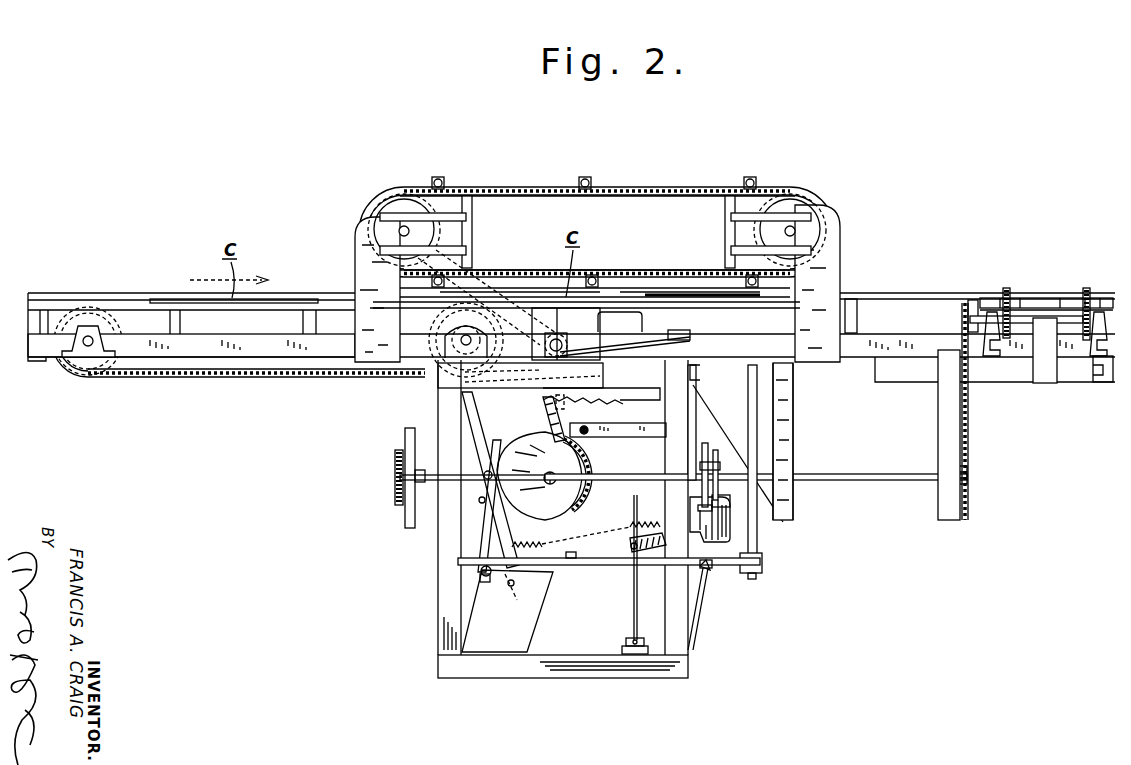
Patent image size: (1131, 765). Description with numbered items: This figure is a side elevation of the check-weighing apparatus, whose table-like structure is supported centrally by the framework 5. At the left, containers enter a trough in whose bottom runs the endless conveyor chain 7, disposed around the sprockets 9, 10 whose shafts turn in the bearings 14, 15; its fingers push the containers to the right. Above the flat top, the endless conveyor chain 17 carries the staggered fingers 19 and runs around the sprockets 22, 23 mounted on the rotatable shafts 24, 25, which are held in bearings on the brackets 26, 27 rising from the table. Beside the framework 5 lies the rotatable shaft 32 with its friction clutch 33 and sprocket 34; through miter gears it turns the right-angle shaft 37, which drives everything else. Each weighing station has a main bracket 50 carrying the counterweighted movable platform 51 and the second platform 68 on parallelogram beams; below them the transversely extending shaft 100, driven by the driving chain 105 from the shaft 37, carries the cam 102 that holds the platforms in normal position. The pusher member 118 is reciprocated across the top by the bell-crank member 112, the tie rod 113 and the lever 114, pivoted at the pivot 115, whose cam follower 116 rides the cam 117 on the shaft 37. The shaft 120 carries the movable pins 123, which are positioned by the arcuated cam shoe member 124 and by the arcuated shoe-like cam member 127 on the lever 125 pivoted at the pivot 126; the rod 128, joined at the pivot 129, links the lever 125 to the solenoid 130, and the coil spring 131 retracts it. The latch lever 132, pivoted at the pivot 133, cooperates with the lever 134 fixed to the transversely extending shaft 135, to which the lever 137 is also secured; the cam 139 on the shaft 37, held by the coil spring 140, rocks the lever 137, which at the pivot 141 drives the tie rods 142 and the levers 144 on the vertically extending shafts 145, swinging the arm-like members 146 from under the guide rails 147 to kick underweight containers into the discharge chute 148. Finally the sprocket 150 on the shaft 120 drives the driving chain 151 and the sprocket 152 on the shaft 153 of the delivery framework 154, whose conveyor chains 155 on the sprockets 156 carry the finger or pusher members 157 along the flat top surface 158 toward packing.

The framework 5 is at (438, 588).
The endless conveyor chain 7 is at (166, 379).
The sprocket 9 is at (77, 320).
The sprocket 10 is at (452, 312).
The bearing 14 is at (96, 345).
The bearing 15 is at (455, 340).
The endless conveyor chain 17 is at (661, 189).
The fingers 19 is at (446, 184).
The sprocket 22 is at (405, 196).
The sprocket 23 is at (801, 198).
The rotatable shaft 24 is at (399, 230).
The rotatable shaft 25 is at (797, 232).
The bracket 26 is at (358, 247).
The bracket 27 is at (831, 248).
The rotatable shaft 32 is at (480, 500).
The friction clutch 33 is at (404, 518).
The sprocket 34 is at (394, 490).
The shaft 37 is at (588, 485).
The main bracket 50 is at (610, 350).
The movable platform 51 is at (597, 297).
The second platform 68 is at (640, 322).
The transversely extending shaft 100 is at (557, 357).
The cam 102 is at (548, 345).
The driving chain 105 is at (546, 418).
The bell-crank member 112 is at (690, 340).
The tie rod 113 is at (608, 402).
The lever 114 is at (497, 515).
The pivot 115 is at (511, 588).
The cam follower 116 is at (478, 513).
The cam 117 is at (572, 567).
The pusher member 118 is at (520, 297).
The shaft 120 is at (858, 481).
The movable pins 123 is at (730, 503).
The arcuated cam shoe member 124 is at (710, 490).
The lever 125 is at (735, 537).
The pivot 126 is at (700, 585).
The arcuated shoe-like cam member 127 is at (718, 468).
The rod 128 is at (632, 612).
The pivot 129 is at (630, 545).
The solenoid 130 is at (638, 655).
The coil spring 131 is at (712, 575).
The latch lever 132 is at (700, 392).
The pivot 133 is at (704, 370).
The lever 134 is at (630, 440).
The transversely extending shaft 135 is at (586, 436).
The lever 137 is at (562, 412).
The cam 139 is at (580, 508).
The coil spring 140 is at (527, 540).
The pivot 141 is at (486, 575).
The tie rods 142 is at (615, 568).
The levers 144 is at (762, 563).
The vertically extending shafts 145 is at (791, 392).
The arm-like members 146 is at (714, 300).
The guide rails 147 is at (686, 300).
The discharge chute 148 is at (790, 433).
The sprocket 150 is at (967, 474).
The driving chain 151 is at (970, 420).
The sprocket 152 is at (974, 300).
The shaft 153 is at (1045, 383).
The framework 154 is at (1108, 385).
The conveyor chains 155 is at (1010, 316).
The sprockets 156 is at (1012, 357).
The finger or pusher members 157 is at (1006, 288).
The flat top surface 158 is at (1070, 298).